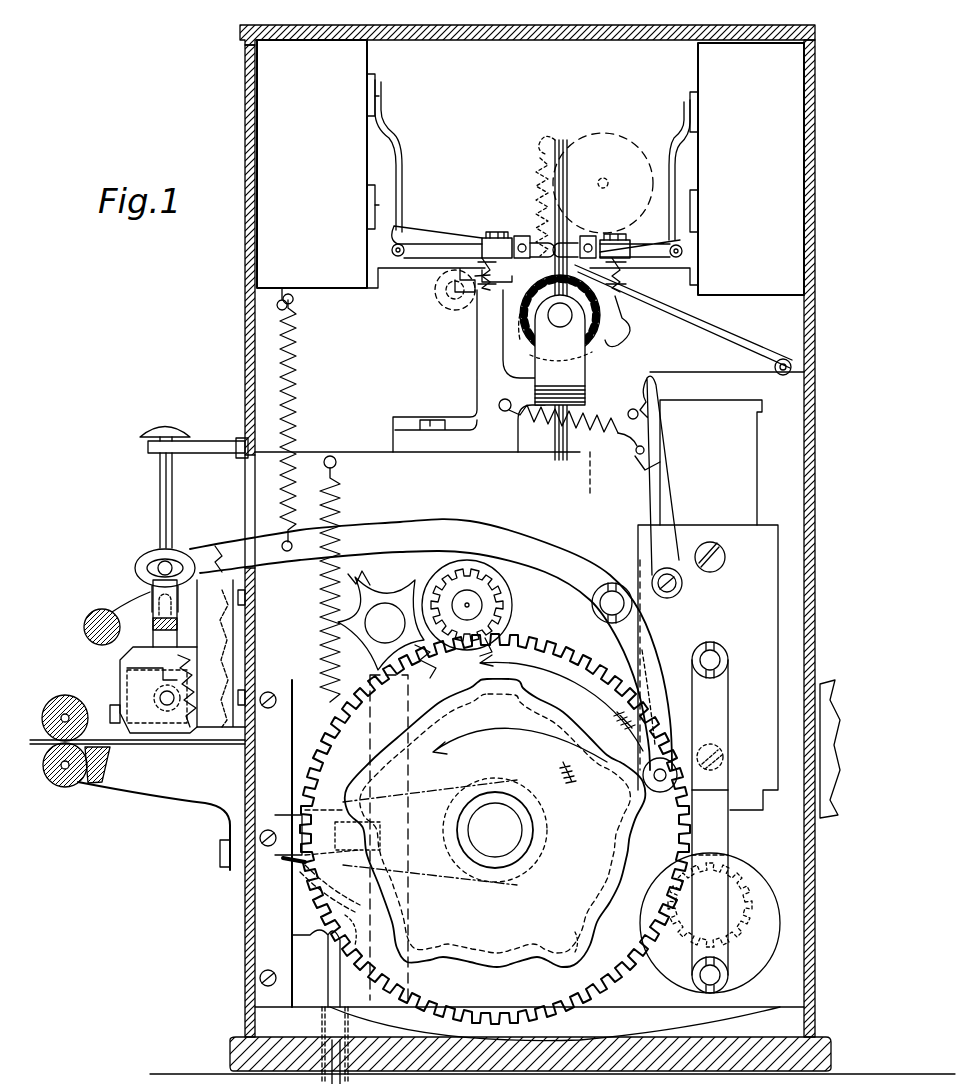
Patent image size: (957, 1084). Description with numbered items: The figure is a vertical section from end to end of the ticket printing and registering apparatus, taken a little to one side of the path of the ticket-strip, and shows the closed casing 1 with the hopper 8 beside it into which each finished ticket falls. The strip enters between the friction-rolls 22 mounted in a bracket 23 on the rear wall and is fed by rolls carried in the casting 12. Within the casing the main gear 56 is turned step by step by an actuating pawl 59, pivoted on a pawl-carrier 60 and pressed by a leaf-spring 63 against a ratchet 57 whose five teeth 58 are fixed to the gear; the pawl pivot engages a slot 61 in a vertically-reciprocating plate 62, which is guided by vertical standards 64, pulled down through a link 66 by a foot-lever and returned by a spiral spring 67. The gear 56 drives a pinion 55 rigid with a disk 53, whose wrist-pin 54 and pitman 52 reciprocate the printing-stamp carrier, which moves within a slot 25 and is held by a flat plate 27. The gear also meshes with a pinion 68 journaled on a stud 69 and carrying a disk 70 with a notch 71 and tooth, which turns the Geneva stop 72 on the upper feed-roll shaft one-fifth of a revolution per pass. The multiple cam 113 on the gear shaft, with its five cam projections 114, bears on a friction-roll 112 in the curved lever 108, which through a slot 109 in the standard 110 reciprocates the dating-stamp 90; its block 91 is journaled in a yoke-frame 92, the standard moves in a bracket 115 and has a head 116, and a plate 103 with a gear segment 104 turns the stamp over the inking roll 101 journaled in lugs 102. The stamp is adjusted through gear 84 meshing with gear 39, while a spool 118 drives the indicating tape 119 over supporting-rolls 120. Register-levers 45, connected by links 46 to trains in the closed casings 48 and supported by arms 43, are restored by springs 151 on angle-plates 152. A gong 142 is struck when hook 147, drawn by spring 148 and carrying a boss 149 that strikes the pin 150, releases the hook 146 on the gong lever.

The closed casing 1 is at (246, 278).
The hopper 8 is at (829, 740).
The casting 12 is at (608, 648).
The friction-rolls 22 is at (40, 718).
The bracket 23 is at (137, 805).
The slot 25 is at (711, 462).
The flat plate 27 is at (708, 667).
The gear 39 is at (570, 357).
The arms or plates 43 is at (360, 572).
The lever 45 is at (668, 226).
The link 46 is at (532, 165).
The closed casings 48 is at (530, 175).
The pitman 52 is at (710, 808).
The disk 53 is at (722, 905).
The wrist-pin 54 is at (722, 978).
The pinion 55 is at (738, 912).
The gear 56 is at (540, 837).
The ratchet 57 is at (538, 719).
The tooth or catch 58 is at (540, 700).
The actuating pawl 59 is at (330, 905).
The pawl-carrier 60 is at (290, 814).
The slot 61 is at (350, 825).
The vertically-reciprocating plate 62 is at (320, 1007).
The leaf-spring 63 is at (290, 864).
The vertical standards 64 is at (275, 843).
The link 66 is at (348, 1062).
The spiral spring 67 is at (341, 579).
The pinion 68 is at (467, 605).
The stud 69 is at (467, 605).
The disk 70 is at (476, 605).
The notch 71 is at (453, 661).
The Geneva stop 72 is at (381, 623).
The gear 84 is at (528, 330).
The dating-stamp 90 is at (120, 660).
The block 91 is at (152, 665).
The yoke-frame 92 is at (164, 613).
The inking roll 101 is at (84, 628).
The lugs 102 is at (125, 599).
The plate 103 is at (153, 695).
The segment of a gear 104 is at (159, 698).
The lever 108 is at (431, 644).
The slot 109 is at (146, 568).
The standard 110 is at (182, 500).
The friction-roll 112 is at (659, 731).
The multiple cam 113 is at (494, 823).
The cam projections 114 is at (566, 942).
The bracket 115 is at (198, 441).
The head 116 is at (165, 420).
The spool 118 is at (525, 318).
The continuous tape 119 is at (683, 316).
The supporting-rolls 120 is at (775, 360).
The gong 142 is at (603, 183).
The hook 146 is at (632, 321).
The hook 147 is at (670, 487).
The spring 148 is at (601, 479).
The boss or projection 149 is at (637, 460).
The pin 150 is at (628, 412).
The springs 151 is at (438, 290).
The angle-plates 152 is at (482, 280).